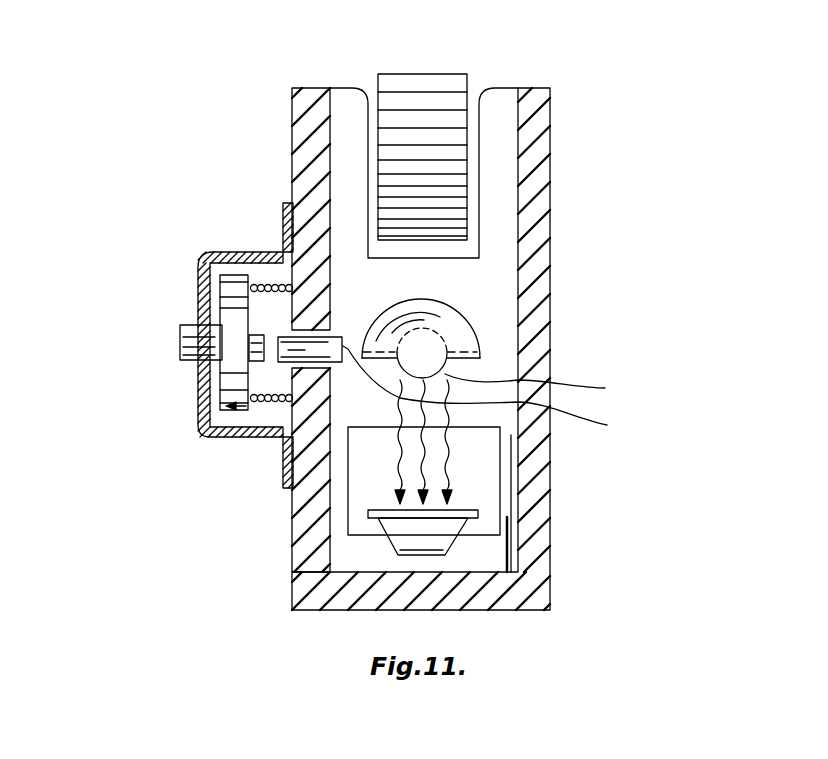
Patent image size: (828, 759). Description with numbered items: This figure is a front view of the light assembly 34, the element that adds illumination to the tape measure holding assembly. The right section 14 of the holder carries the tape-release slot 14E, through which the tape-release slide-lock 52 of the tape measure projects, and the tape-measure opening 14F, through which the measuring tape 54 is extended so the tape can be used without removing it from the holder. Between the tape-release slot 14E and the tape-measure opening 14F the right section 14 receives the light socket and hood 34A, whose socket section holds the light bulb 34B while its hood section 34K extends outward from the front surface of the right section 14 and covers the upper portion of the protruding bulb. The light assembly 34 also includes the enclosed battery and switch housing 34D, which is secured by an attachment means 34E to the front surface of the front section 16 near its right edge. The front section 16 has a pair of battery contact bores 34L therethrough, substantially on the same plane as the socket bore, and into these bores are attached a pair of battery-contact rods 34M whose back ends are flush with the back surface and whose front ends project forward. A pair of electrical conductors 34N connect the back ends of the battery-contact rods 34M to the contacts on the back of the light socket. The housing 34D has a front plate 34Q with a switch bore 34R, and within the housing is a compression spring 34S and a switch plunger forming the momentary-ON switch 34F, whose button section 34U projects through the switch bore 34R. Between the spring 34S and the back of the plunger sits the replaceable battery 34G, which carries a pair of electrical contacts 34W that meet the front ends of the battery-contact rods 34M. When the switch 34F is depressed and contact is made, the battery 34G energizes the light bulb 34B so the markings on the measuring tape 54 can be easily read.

The right section 14 is at (440, 349).
The front section 16 is at (298, 128).
The tape-release slot 14E is at (470, 248).
The tape-measure opening 14F is at (477, 465).
The tape-release slide-lock 52 is at (452, 183).
The measuring tape 54 is at (438, 538).
The light assembly 34 is at (214, 92).
The light socket and hood 34A is at (467, 345).
The hood section 34K is at (467, 342).
The light bulb 34B is at (553, 392).
The electrical conductors 34N is at (503, 396).
The battery and switch housing 34D is at (236, 252).
The attachment means 34E is at (290, 200).
The front plate 34Q is at (196, 270).
The battery contact bores 34L is at (278, 338).
The momentary-ON switch 34F is at (180, 345).
The button section 34U is at (178, 343).
The switch bore 34R is at (252, 348).
The electrical contacts 34W is at (197, 392).
The battery 34G is at (257, 346).
The battery-contact rods 34M is at (224, 438).
The compression spring 34S is at (270, 405).